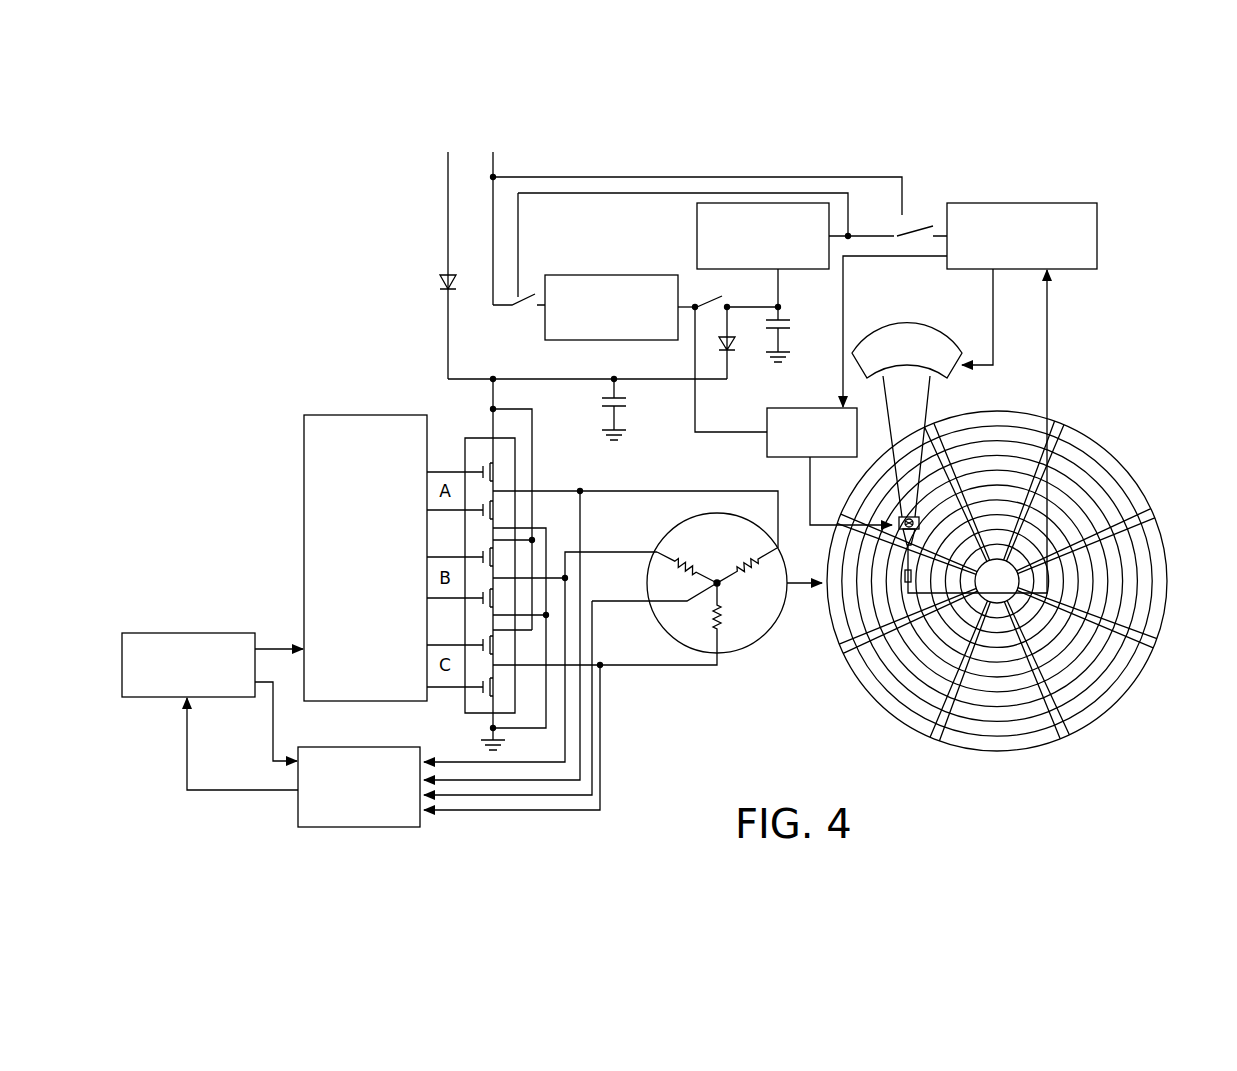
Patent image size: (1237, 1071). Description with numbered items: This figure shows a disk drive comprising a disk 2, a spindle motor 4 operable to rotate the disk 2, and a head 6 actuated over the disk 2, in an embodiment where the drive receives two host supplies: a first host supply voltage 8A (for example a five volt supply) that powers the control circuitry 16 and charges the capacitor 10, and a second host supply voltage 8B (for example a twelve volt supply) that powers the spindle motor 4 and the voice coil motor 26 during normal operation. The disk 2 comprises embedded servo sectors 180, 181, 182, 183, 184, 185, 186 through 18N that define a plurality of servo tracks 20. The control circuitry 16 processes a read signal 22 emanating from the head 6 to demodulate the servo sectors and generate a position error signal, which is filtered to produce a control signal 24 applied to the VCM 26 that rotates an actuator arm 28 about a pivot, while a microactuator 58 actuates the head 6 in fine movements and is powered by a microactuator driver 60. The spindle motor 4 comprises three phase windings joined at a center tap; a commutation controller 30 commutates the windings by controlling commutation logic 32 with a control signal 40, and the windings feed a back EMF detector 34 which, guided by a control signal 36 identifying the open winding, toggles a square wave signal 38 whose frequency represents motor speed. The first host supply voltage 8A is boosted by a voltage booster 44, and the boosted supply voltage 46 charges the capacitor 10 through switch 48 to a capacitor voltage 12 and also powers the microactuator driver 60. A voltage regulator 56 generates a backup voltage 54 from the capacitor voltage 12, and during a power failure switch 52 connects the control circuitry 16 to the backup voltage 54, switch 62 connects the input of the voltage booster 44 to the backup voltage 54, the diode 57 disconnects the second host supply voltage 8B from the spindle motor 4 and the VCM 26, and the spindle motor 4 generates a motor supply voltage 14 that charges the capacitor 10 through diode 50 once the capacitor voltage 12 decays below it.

The disk 2 is at (1005, 575).
The spindle motor 4 is at (766, 637).
The head 6 is at (903, 580).
The first host supply voltage 8A is at (496, 165).
The second host supply voltage 8B is at (446, 165).
The capacitor 10 is at (791, 328).
The capacitor voltage 12 is at (778, 287).
The motor supply voltage 14 is at (634, 382).
The control circuitry 16 is at (1097, 236).
The servo sector 180 is at (1061, 426).
The servo sector 181 is at (1154, 513).
The servo sector 182 is at (1152, 646).
The servo sector 183 is at (1059, 740).
The servo sector 184 is at (934, 740).
The servo sector 185 is at (839, 640).
The servo sector 186 is at (858, 528).
The servo sector 18N is at (936, 424).
The servo tracks 20 is at (1006, 432).
The read signal 22 is at (1047, 325).
The control signal 24 is at (993, 290).
The voice coil motor 26 is at (907, 322).
The actuator arm 28 is at (890, 442).
The commutation controller 30 is at (190, 632).
The commutation logic 32 is at (303, 512).
The back EMF detector 34 is at (358, 829).
The control signal 36 is at (275, 718).
The square wave signal 38 is at (204, 792).
The control signal 40 is at (273, 647).
The voltage booster 44 is at (611, 274).
The boosted supply voltage 46 is at (695, 361).
The switch 48 is at (712, 303).
The diode 50 is at (737, 349).
The switch 52 is at (905, 225).
The backup voltage 54 is at (858, 235).
The voltage regulator 56 is at (697, 236).
The diode 57 is at (437, 284).
The microactuator 58 is at (922, 531).
The microactuator driver 60 is at (784, 458).
The switch 62 is at (517, 313).